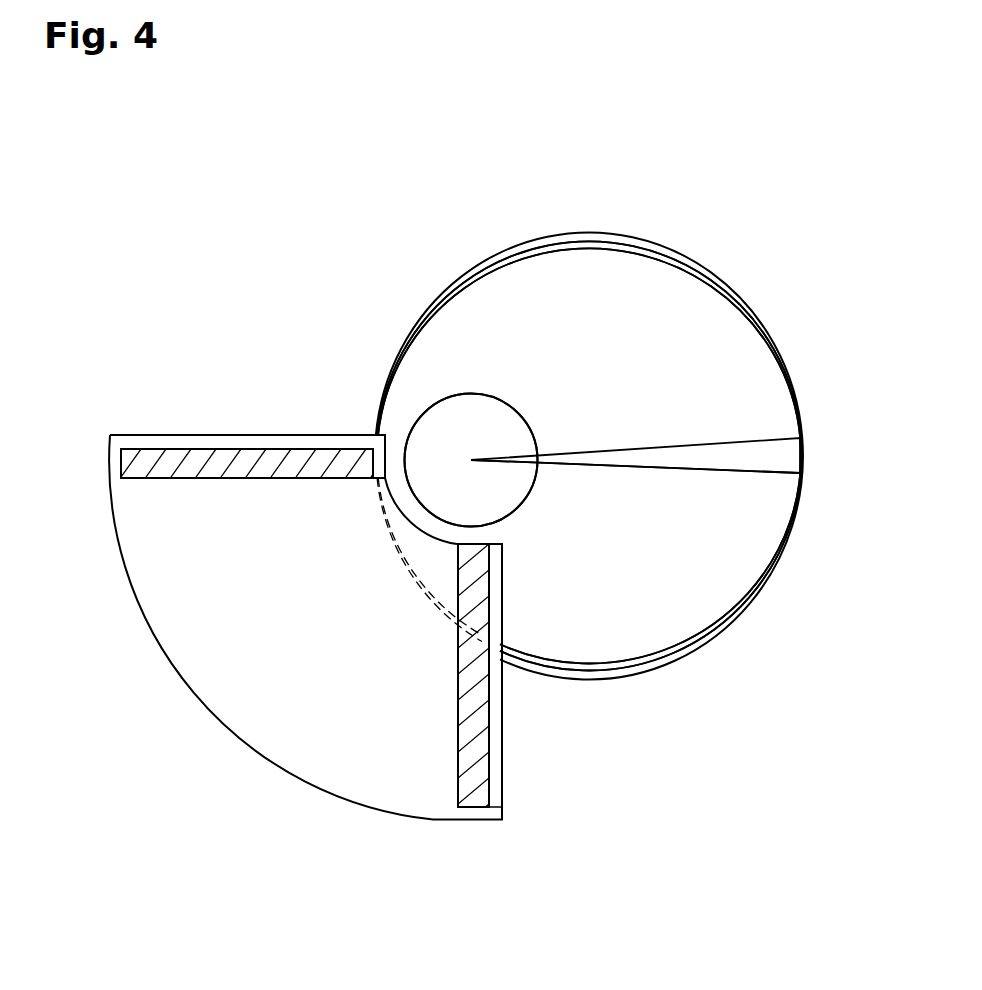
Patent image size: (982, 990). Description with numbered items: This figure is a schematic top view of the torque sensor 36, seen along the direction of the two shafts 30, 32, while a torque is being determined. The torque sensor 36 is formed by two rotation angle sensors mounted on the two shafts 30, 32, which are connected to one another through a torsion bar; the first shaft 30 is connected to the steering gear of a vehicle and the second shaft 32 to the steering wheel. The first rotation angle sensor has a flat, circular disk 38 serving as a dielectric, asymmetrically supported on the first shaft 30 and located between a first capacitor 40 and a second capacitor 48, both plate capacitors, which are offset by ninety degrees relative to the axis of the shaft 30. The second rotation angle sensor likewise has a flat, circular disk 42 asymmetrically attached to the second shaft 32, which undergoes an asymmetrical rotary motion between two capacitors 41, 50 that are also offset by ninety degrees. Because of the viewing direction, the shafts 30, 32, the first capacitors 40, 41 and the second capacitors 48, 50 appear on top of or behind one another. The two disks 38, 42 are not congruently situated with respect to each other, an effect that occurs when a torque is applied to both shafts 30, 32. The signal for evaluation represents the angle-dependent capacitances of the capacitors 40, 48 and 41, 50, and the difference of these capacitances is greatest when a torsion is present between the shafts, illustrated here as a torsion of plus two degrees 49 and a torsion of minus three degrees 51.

The first shaft 30 is at (490, 415).
The second shaft 32 is at (471, 460).
The torque sensor 36 is at (785, 222).
The disk 38 is at (602, 221).
The first capacitor 40 is at (510, 760).
The first capacitor 41 is at (473, 675).
The disk 42 is at (589, 456).
The second capacitor 48 is at (200, 428).
The torsion of +2° 49 is at (698, 437).
The second capacitor 50 is at (247, 456).
The torsion of −3° 51 is at (712, 477).